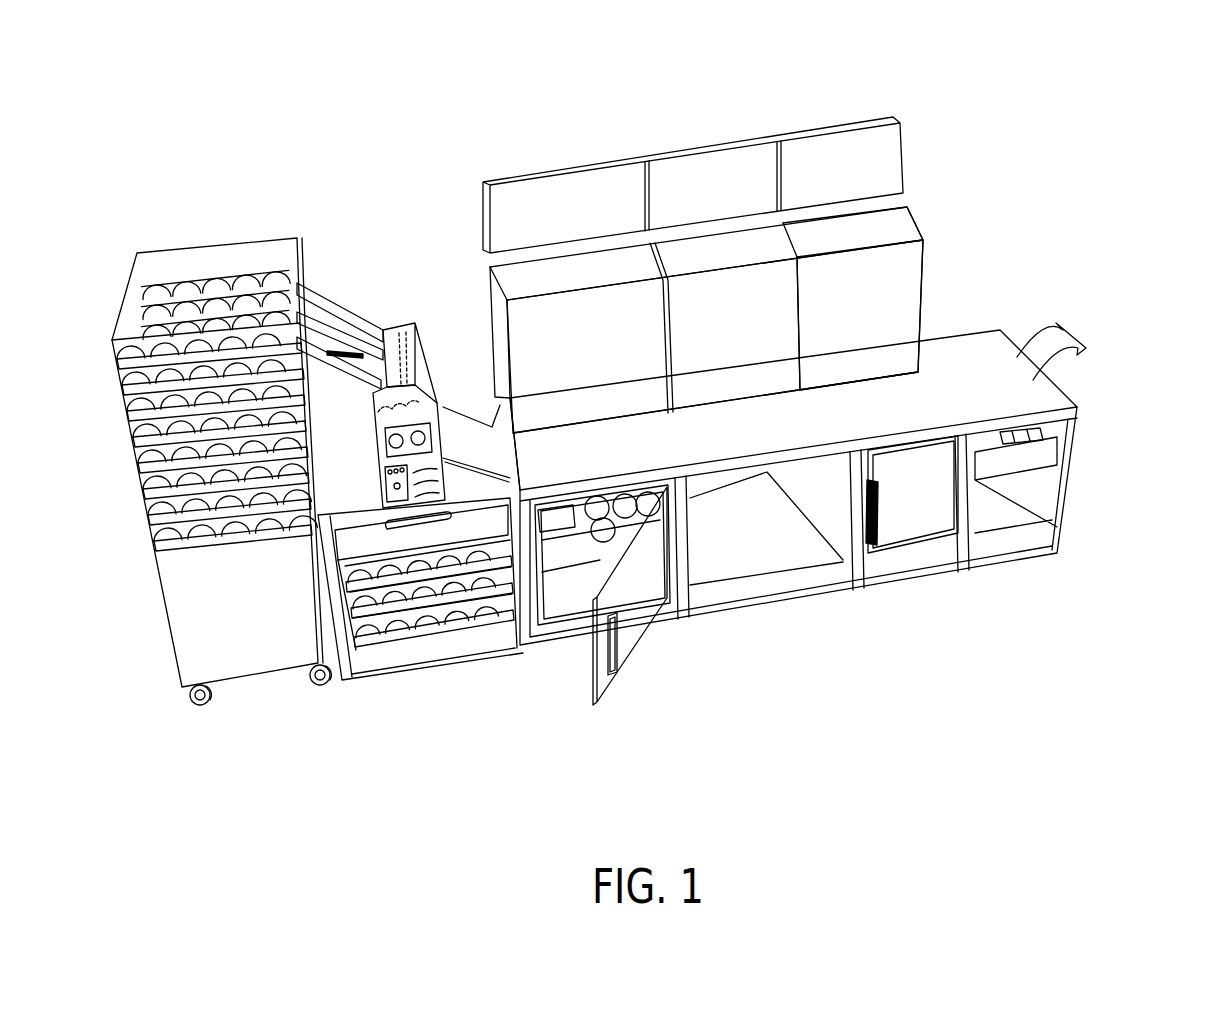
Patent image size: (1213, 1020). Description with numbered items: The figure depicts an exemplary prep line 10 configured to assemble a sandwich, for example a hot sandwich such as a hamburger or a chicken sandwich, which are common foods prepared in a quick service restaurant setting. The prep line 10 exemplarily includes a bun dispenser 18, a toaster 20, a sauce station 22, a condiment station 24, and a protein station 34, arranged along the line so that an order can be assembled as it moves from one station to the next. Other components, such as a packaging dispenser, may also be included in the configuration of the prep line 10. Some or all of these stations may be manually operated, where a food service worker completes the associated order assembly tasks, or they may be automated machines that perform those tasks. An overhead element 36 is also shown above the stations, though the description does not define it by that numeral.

The prep line 10 is at (1140, 116).
The bun dispenser 18 is at (254, 258).
The toaster 20 is at (418, 363).
The sauce station 22 is at (548, 272).
The condiment station 24 is at (735, 350).
The protein station 34 is at (915, 272).
The overhead shelf 36 is at (705, 172).